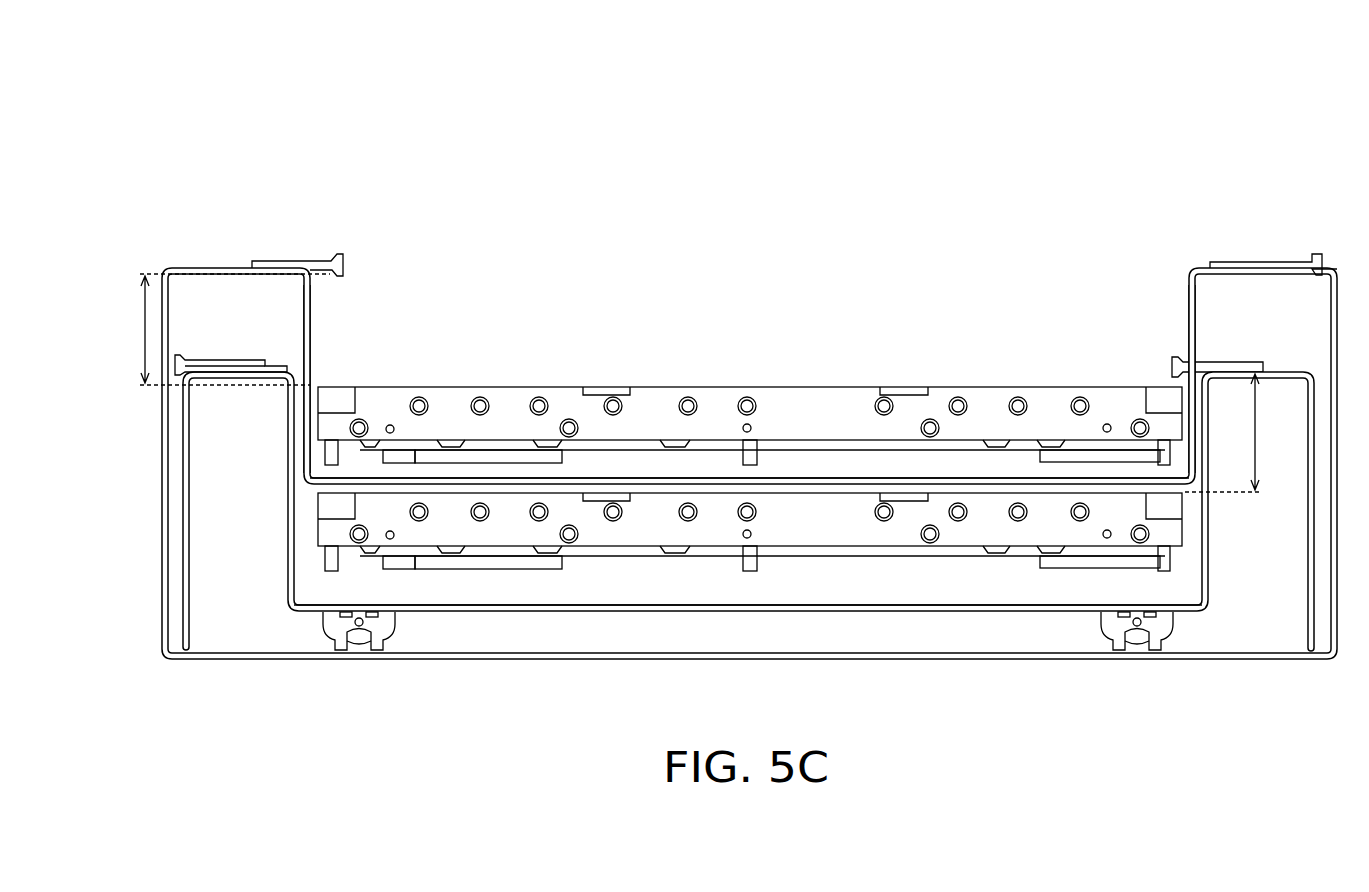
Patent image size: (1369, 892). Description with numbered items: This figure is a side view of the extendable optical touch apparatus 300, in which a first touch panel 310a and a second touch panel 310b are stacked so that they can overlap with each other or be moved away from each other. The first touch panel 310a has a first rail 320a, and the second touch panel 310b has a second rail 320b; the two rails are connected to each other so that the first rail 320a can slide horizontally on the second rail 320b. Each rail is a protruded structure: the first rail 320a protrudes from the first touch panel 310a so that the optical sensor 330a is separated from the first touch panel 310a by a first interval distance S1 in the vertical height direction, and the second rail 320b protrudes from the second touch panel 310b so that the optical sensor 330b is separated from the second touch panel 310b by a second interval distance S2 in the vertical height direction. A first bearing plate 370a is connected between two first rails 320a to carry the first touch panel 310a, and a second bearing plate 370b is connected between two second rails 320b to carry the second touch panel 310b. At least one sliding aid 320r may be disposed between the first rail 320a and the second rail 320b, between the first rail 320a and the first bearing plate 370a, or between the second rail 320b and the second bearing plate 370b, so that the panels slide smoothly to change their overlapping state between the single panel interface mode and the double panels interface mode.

The optical touch apparatus 300 is at (127, 131).
The first rail 320a is at (185, 268).
The second rail 320b is at (240, 372).
The sliding aid 320r is at (342, 640).
The optical sensor 330a is at (1189, 266).
The optical sensor 330b is at (1215, 365).
The first touch panel 310a is at (655, 398).
The second touch panel 310b is at (963, 500).
The first bearing plate 370a is at (655, 484).
The second bearing plate 370b is at (850, 612).
The first interval distance S1 is at (221, 329).
The second interval distance S2 is at (1235, 433).